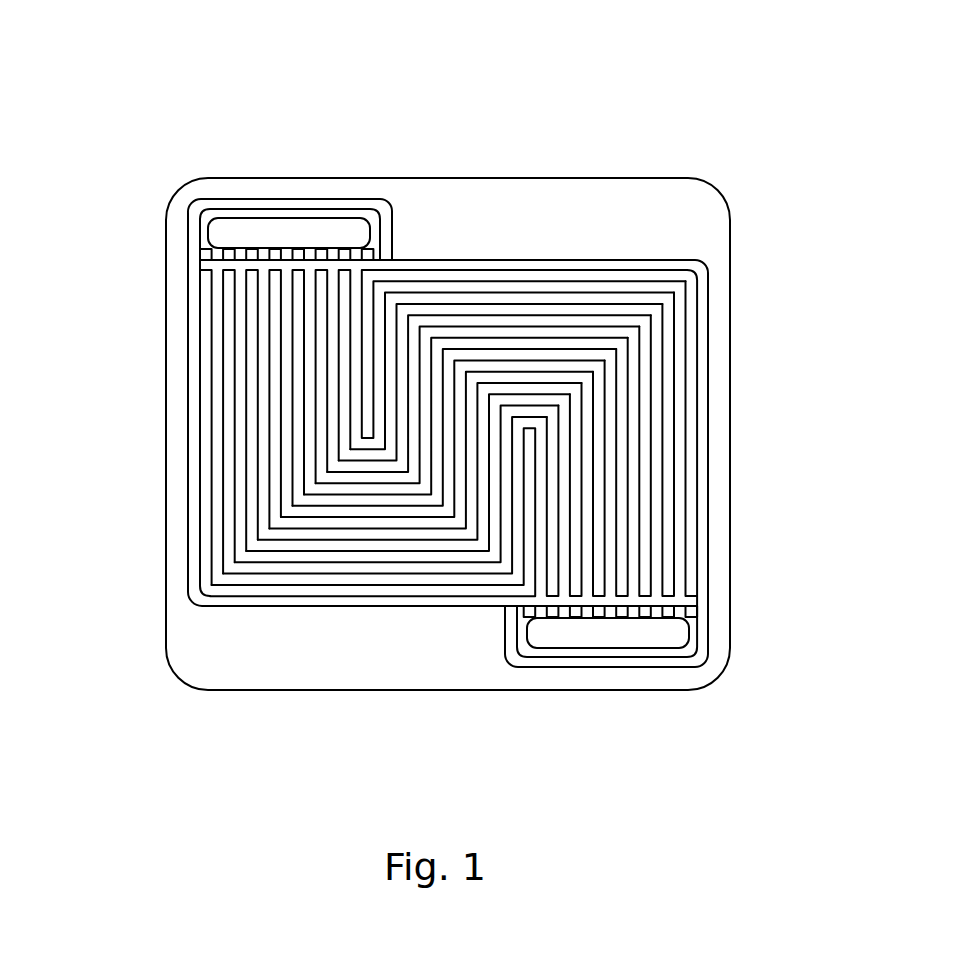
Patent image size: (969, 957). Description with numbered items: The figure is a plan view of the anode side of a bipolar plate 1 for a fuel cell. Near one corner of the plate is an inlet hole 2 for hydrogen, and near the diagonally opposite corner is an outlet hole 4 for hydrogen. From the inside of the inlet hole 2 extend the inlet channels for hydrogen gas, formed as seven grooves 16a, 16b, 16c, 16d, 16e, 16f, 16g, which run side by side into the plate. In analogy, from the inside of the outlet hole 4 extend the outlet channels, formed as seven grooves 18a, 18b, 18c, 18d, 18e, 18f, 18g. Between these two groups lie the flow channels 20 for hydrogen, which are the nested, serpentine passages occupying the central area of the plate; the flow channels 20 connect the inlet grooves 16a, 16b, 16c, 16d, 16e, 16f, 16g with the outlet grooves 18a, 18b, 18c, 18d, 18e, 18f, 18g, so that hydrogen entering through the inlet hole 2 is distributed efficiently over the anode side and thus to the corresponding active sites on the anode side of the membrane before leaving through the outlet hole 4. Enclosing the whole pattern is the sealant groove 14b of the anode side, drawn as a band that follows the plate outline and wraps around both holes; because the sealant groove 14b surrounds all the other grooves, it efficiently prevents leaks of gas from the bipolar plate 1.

The bipolar plate 1 is at (524, 157).
The inlet hole for hydrogen 2 is at (278, 236).
The outlet hole for hydrogen 4 is at (668, 634).
The sealant groove 14b is at (200, 212).
The inlet groove 16a is at (221, 258).
The inlet groove 16b is at (243, 258).
The inlet groove 16c is at (266, 258).
The inlet groove 16d is at (289, 258).
The inlet groove 16e is at (312, 258).
The inlet groove 16f is at (335, 258).
The inlet groove 16g is at (360, 258).
The outlet groove 18a is at (540, 612).
The outlet groove 18b is at (563, 612).
The outlet groove 18c is at (588, 612).
The outlet groove 18d is at (612, 612).
The outlet groove 18e is at (635, 612).
The outlet groove 18f is at (657, 612).
The outlet groove 18g is at (681, 612).
The flow channels 20 is at (355, 433).